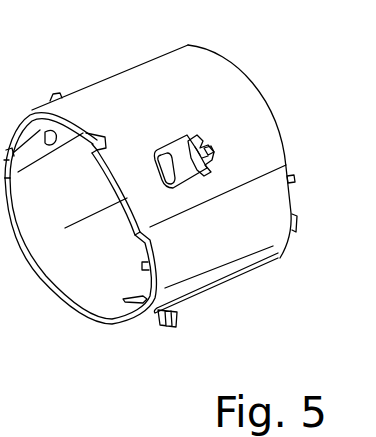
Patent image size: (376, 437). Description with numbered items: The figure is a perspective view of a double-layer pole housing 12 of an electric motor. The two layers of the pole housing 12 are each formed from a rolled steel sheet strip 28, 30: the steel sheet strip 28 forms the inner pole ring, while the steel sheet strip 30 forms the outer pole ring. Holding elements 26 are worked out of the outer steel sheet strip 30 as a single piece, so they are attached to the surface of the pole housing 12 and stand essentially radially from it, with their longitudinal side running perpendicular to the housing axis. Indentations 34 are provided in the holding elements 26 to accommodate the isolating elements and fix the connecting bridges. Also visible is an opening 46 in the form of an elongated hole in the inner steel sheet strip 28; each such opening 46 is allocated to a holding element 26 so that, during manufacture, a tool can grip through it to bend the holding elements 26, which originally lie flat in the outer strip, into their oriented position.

The pole housing 12 is at (255, 236).
The holding elements 26 is at (191, 134).
The steel sheet strip 28 is at (126, 325).
The steel sheet strip 30 is at (85, 108).
The indentations 34 is at (206, 146).
The opening 46 is at (163, 165).